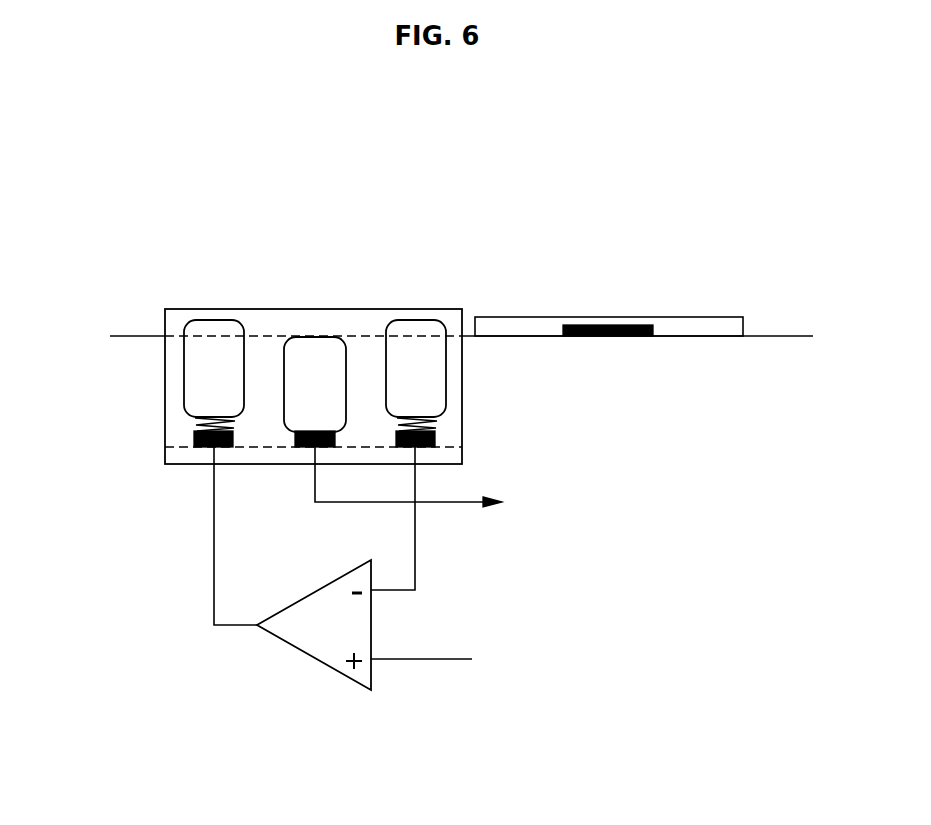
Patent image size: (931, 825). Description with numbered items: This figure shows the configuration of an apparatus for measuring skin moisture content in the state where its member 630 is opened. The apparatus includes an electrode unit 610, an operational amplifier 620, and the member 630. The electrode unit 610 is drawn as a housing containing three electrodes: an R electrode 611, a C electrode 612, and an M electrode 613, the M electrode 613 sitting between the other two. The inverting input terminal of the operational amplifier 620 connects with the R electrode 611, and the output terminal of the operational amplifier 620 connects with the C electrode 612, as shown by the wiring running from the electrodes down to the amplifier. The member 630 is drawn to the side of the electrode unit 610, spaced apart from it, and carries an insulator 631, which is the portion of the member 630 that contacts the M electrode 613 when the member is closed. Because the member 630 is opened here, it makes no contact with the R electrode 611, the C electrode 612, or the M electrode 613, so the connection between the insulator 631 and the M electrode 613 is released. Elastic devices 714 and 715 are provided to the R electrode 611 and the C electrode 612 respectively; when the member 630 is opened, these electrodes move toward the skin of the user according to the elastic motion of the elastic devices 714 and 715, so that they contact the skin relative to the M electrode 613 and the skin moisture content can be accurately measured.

The electrode unit 610 is at (165, 309).
The R electrode 611 is at (447, 372).
The C electrode 612 is at (185, 373).
The M electrode 613 is at (317, 337).
The operational amplifier 620 is at (315, 660).
The member 630 is at (705, 317).
The insulator 631 is at (612, 325).
The elastic device 714 is at (430, 428).
The elastic device 715 is at (200, 424).